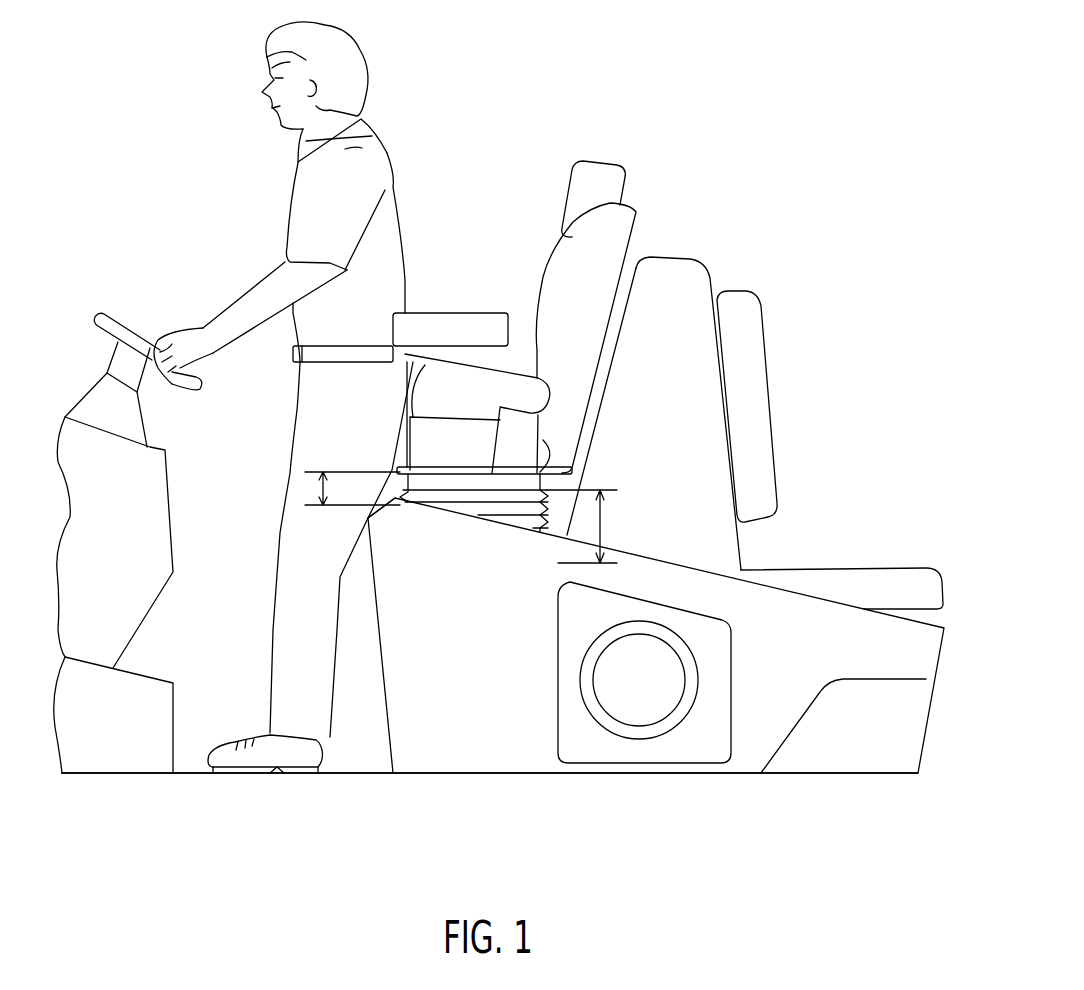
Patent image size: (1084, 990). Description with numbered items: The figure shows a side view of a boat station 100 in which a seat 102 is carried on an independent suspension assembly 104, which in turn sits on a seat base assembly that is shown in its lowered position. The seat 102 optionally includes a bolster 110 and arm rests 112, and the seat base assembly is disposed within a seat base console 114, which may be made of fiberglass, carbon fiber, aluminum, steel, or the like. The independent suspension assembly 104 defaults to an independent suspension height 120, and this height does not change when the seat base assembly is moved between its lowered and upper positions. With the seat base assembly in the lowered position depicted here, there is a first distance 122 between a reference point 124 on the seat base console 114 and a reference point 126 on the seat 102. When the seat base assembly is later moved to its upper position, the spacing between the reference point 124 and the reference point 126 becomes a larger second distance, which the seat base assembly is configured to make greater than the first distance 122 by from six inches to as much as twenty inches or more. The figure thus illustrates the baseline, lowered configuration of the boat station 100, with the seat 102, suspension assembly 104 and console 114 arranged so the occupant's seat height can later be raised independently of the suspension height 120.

The boat station 100 is at (710, 56).
The seat 102 is at (572, 283).
The independent suspension assembly 104 is at (500, 495).
The bolster 110 is at (440, 397).
The arm rests 112 is at (445, 332).
The seat base console 114 is at (500, 692).
The independent suspension height 120 is at (600, 523).
The first distance 122 is at (317, 485).
The reference point on the seat base console 124 is at (392, 510).
The reference point on the seat 126 is at (393, 473).